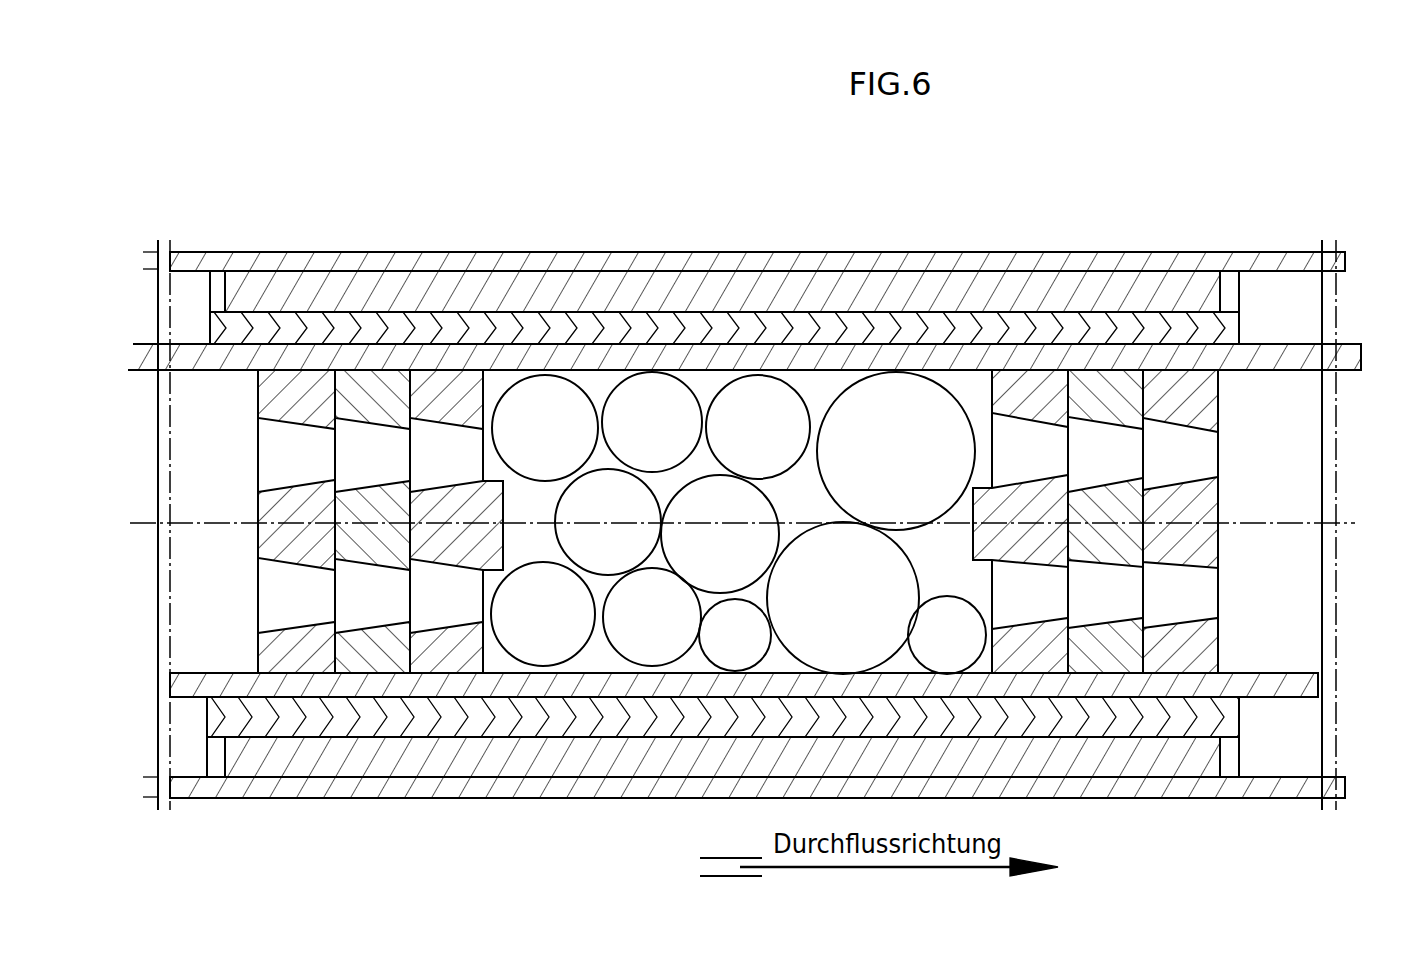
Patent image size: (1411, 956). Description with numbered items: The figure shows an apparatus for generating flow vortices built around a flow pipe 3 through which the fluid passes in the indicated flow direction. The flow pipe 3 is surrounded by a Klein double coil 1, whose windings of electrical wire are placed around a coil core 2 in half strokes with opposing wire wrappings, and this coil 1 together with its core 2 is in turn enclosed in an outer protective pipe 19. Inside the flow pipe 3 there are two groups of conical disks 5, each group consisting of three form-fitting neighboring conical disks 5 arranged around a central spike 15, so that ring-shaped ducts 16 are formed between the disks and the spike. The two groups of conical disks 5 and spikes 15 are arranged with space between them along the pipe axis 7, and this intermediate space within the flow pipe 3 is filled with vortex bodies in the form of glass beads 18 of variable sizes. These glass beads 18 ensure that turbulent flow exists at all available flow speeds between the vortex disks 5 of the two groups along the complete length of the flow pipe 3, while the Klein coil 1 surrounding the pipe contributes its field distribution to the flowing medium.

The Klein double coil 1 is at (572, 295).
The coil core 2 is at (405, 330).
The flow pipe 3 is at (220, 353).
The conical disks 5 is at (685, 513).
The flow channel axis 7 is at (1357, 526).
The central spike 15 is at (1203, 507).
The ring-shaped ducts 16 is at (1200, 439).
The glass beads 18 is at (885, 398).
The outer protective pipe 19 is at (727, 265).